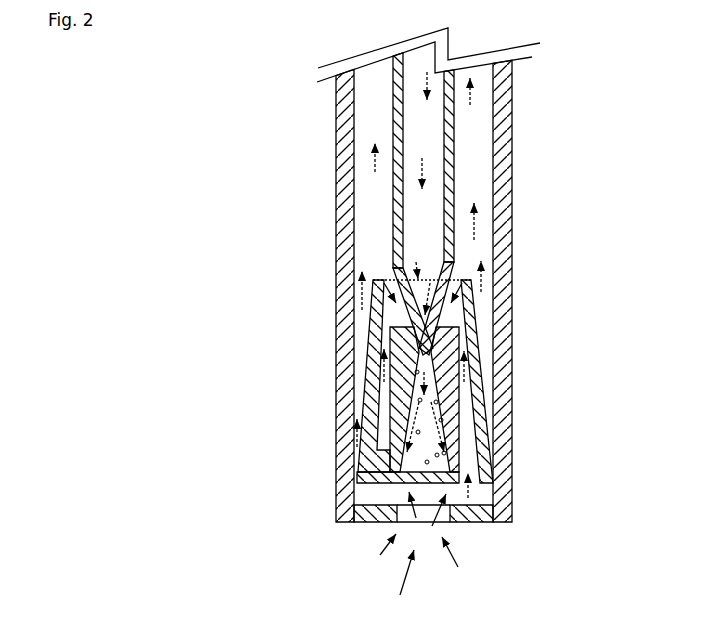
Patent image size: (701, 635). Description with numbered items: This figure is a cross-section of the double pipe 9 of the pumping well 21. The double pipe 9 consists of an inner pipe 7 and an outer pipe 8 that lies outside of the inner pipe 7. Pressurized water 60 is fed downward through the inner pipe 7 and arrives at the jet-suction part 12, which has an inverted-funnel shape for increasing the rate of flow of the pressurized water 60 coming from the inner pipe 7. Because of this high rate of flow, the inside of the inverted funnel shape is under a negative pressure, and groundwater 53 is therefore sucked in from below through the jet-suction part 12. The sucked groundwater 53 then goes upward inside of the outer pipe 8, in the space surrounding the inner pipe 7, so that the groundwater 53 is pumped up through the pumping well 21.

The double pipe 9 is at (232, 82).
The inner pipe 7 is at (396, 118).
The outer pipe 8 is at (336, 160).
The pressurized water 60 is at (410, 168).
The jet-suction part 12 is at (367, 328).
The pumping well 21 is at (522, 104).
The groundwater 53 is at (492, 228).